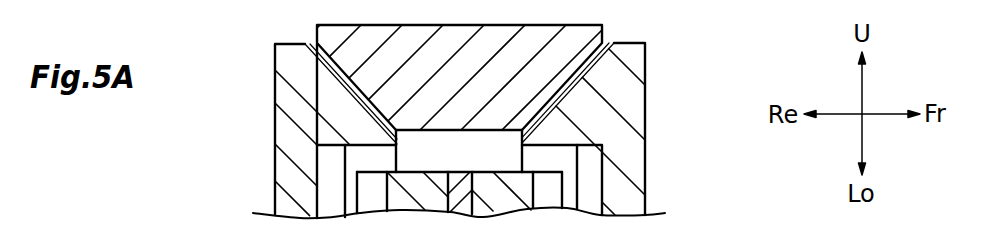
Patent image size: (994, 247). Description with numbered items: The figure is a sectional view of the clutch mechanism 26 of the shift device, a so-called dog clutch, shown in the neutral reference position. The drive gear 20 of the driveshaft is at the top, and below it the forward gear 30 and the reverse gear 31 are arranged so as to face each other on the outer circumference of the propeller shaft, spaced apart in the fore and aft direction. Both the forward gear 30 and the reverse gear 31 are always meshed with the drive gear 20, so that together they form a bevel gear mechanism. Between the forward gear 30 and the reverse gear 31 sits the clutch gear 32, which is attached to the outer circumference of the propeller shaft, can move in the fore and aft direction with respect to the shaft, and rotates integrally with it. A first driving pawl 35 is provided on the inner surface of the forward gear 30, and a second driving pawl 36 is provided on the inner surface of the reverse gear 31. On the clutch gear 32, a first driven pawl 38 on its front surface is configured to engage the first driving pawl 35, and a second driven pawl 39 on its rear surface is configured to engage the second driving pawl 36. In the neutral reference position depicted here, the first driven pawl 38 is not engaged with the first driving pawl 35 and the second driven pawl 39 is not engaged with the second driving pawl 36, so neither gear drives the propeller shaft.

The drive gear 20 is at (583, 68).
The clutch mechanism 26 is at (192, 157).
The forward gear 30 is at (648, 83).
The reverse gear 31 is at (270, 90).
The clutch gear 32 is at (534, 169).
The first driving pawl 35 is at (592, 160).
The second driving pawl 36 is at (325, 163).
The first driven pawl 38 is at (547, 187).
The second driven pawl 39 is at (372, 187).